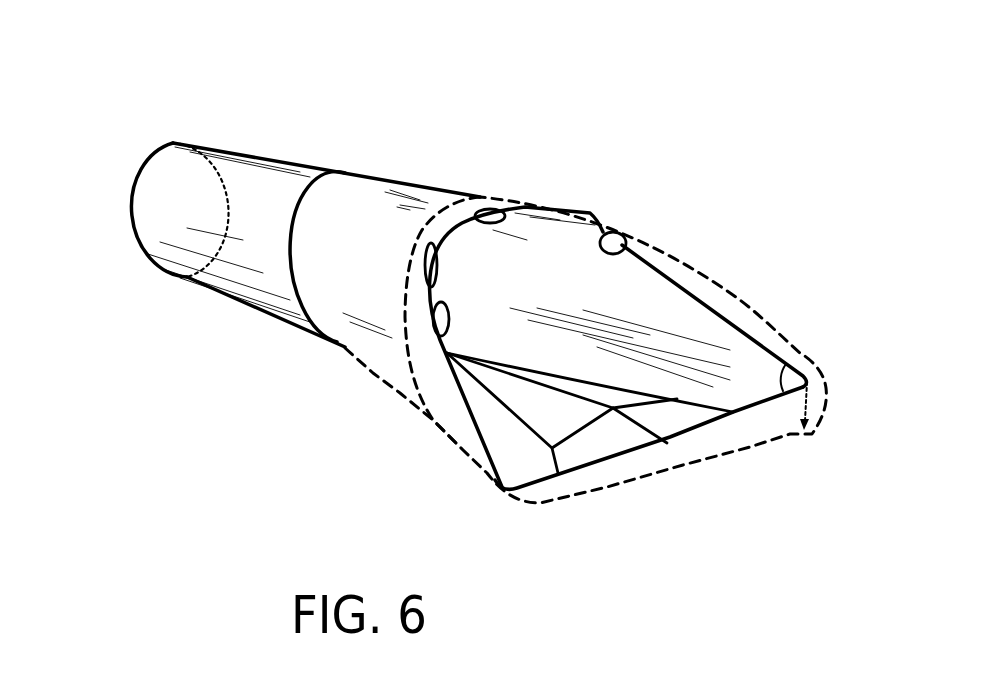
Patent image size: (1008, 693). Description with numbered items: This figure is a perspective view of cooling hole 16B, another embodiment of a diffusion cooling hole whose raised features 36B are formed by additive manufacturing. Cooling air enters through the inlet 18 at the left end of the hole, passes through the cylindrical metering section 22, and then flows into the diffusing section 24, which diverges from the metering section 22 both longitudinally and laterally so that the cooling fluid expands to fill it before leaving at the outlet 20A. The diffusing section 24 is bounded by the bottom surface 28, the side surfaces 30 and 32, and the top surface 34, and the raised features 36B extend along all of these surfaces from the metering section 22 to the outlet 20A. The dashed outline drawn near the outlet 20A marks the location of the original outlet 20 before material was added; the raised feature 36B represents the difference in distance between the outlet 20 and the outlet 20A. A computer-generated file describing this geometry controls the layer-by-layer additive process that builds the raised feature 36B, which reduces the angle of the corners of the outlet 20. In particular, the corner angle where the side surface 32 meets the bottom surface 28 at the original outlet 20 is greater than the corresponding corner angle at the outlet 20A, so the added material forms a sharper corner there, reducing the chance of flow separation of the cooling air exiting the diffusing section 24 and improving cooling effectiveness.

The cooling hole 16B is at (532, 119).
The inlet 18 is at (162, 208).
The outlet 20 is at (812, 434).
The outlet 20A is at (753, 334).
The metering section 22 is at (263, 310).
The diffusing section 24 is at (556, 238).
The bottom surface 28 is at (640, 448).
The side surface 30 is at (447, 352).
The side surface 32 is at (630, 235).
The top surface 34 is at (513, 212).
The raised feature 36B is at (685, 434).